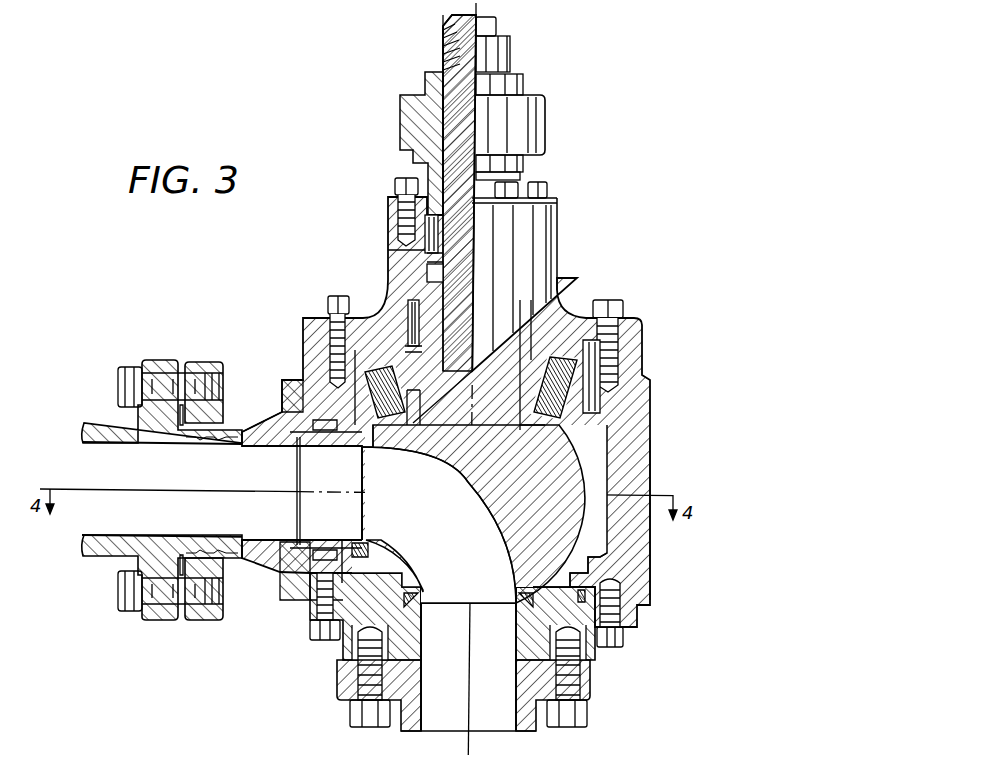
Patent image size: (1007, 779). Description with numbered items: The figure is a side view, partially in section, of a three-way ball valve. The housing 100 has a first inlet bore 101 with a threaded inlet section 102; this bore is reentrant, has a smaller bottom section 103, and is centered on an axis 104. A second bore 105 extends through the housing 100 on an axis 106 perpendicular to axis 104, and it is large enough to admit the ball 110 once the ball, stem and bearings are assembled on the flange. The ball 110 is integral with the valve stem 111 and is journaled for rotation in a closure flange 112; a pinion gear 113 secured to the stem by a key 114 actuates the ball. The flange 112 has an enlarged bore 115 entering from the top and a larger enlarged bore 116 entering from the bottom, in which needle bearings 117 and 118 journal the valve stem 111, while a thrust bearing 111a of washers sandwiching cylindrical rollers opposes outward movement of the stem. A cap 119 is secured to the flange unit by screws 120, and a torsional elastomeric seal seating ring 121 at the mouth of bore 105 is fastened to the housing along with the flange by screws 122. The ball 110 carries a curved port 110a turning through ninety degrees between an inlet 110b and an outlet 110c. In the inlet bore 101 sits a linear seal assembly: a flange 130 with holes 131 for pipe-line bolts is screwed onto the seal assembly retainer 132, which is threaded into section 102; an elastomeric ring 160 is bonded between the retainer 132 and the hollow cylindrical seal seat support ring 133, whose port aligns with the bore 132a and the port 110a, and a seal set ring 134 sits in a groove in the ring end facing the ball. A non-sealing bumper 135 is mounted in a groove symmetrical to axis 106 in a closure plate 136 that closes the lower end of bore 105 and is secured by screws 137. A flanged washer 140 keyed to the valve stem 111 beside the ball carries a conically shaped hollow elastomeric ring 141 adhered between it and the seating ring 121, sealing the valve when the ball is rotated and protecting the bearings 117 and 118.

The housing 100 is at (647, 413).
The first inlet bore 101 is at (312, 583).
The threaded inlet section 102 is at (300, 410).
The smaller bottom section 103 is at (607, 545).
The axis 104 is at (660, 496).
The second bore 105 is at (580, 390).
The axis 106 is at (467, 740).
The ball 110 is at (553, 541).
The curved port 110a is at (468, 482).
The inlet 110b is at (360, 477).
The outlet 110c is at (485, 600).
The valve stem 111 is at (463, 40).
The thrust bearing 111a is at (438, 278).
The closure flange 112 is at (547, 242).
The pinion gear 113 is at (532, 132).
The key 114 is at (447, 123).
The enlarged bore 115 is at (427, 253).
The enlarged bore 116 is at (407, 320).
The needle bearing 117 is at (438, 233).
The needle bearing 118 is at (407, 333).
The cap 119 is at (388, 207).
The screws 120 is at (403, 181).
The torsional elastomeric seal seating ring 121 is at (310, 353).
The screws 122 is at (613, 312).
The flange 130 is at (207, 362).
The holes 131 is at (190, 598).
The seal assembly retainer 132 is at (282, 553).
The bore 132a is at (212, 535).
The seal seat support ring 133 is at (320, 437).
The seal set ring 134 is at (378, 530).
The bumper 135 is at (410, 657).
The closure plate 136 is at (540, 635).
The screws 137 is at (323, 632).
The flanged washer 140 is at (540, 418).
The conically shaped hollow elastomeric ring 141 is at (410, 377).
The elastomeric ring 160 is at (303, 540).